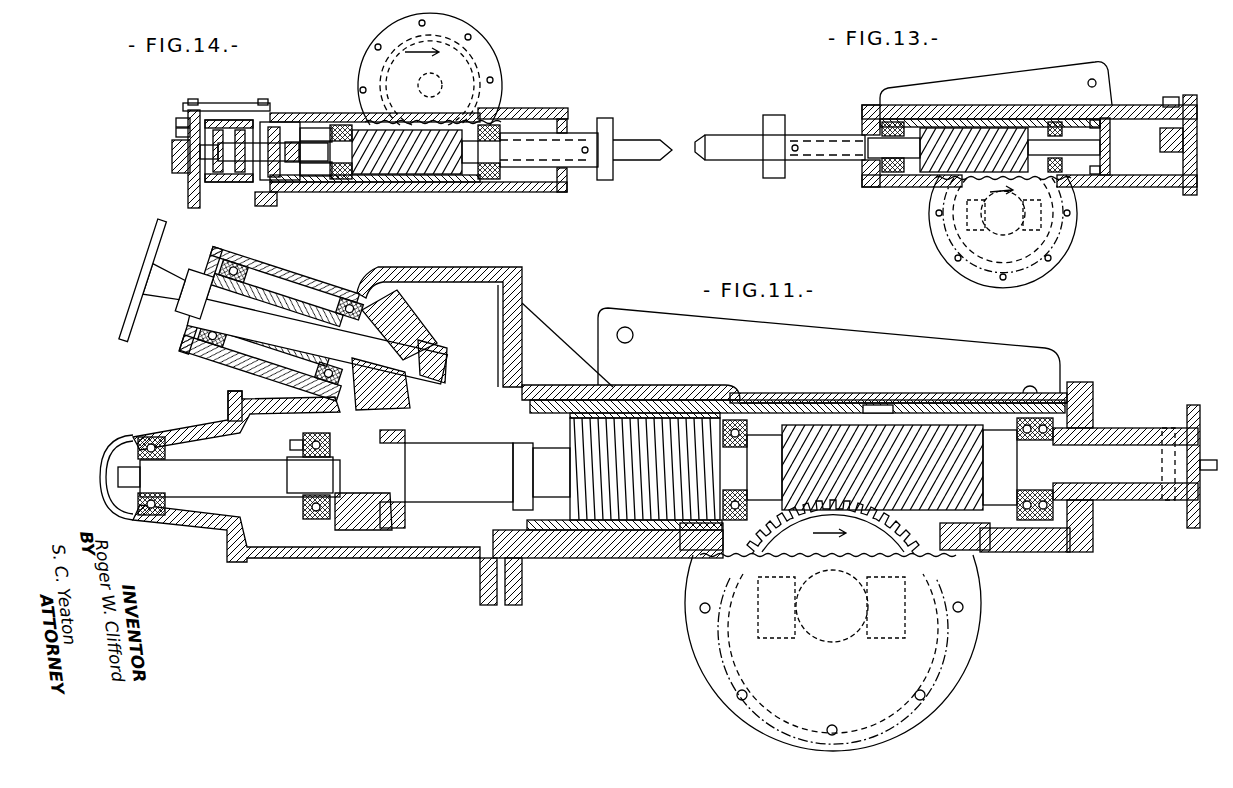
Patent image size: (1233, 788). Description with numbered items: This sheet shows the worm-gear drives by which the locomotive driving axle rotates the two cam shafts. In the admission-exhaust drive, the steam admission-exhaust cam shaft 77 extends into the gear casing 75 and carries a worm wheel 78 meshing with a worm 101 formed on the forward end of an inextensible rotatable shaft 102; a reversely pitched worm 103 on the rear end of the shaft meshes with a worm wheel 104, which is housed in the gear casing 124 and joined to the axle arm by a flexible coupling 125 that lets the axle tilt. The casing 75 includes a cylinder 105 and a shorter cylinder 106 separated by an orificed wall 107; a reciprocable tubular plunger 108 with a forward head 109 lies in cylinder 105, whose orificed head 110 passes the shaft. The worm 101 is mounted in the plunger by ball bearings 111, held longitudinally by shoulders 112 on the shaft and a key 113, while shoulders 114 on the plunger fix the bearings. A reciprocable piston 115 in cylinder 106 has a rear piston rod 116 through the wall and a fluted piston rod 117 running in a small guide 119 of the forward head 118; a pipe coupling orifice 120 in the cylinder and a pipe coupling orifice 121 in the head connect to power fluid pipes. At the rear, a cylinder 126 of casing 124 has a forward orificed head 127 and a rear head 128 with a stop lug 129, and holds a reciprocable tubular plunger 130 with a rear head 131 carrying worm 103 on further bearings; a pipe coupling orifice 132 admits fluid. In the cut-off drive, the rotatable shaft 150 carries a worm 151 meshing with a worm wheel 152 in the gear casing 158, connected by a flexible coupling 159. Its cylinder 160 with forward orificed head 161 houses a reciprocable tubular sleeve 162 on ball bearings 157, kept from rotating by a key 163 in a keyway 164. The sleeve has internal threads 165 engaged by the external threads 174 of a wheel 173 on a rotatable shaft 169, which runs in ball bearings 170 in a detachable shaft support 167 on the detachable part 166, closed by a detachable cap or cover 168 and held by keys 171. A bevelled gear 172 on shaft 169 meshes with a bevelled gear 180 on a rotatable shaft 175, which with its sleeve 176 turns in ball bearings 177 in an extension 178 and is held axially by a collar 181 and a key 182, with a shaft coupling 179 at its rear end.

In FIG. 14, the gear casing 75 is at (495, 96).
In FIG. 14, the steam admission-exhaust cam shaft 77 is at (418, 82).
In FIG. 14, the worm wheel 78 is at (482, 62).
In FIG. 14, the worm 101 is at (406, 188).
In FIG. 13, the rotatable shaft 102 is at (707, 141).
In FIG. 13, the worm 103 is at (926, 172).
In FIG. 13, the worm wheel 104 is at (1066, 223).
In FIG. 14, the cylinder 105 is at (545, 113).
In FIG. 14, the shorter cylinder 106 is at (222, 120).
In FIG. 14, the orificed wall 107 is at (276, 122).
In FIG. 14, the reciprocable tubular plunger 108 is at (330, 126).
In FIG. 14, the forward head 109 is at (300, 125).
In FIG. 14, the orificed head 110 is at (576, 126).
In FIG. 14, the ball bearings 111 is at (306, 190).
In FIG. 13, the ball bearings 111 is at (885, 181).
In FIG. 14, the shoulders 112 is at (346, 190).
In FIG. 14, the key 113 is at (320, 126).
In FIG. 14, the shoulders 114 is at (314, 192).
In FIG. 14, the reciprocable piston 115 is at (230, 186).
In FIG. 14, the rear piston rod 116 is at (250, 190).
In FIG. 14, the fluted piston rod 117 is at (181, 170).
In FIG. 14, the forward head 118 is at (190, 102).
In FIG. 14, the small guide 119 is at (176, 133).
In FIG. 14, the pipe coupling orifice 120 is at (270, 206).
In FIG. 14, the pipe coupling orifice 121 is at (178, 121).
In FIG. 13, the gear casing 124 is at (975, 88).
In FIG. 13, the flexible coupling 125 is at (1060, 251).
In FIG. 13, the cylinder 126 is at (1118, 101).
In FIG. 13, the forward orificed head 127 is at (868, 111).
In FIG. 13, the rear head 128 is at (1185, 186).
In FIG. 13, the stop lug 129 is at (1160, 138).
In FIG. 13, the reciprocable tubular plunger 130 is at (914, 119).
In FIG. 13, the rear head 131 is at (1110, 150).
In FIG. 13, the pipe coupling orifice 132 is at (1172, 97).
In FIG. 11, the rotatable shaft 150 is at (1115, 445).
In FIG. 11, the worm 151 is at (990, 478).
In FIG. 11, the worm wheel 152 is at (975, 630).
In FIG. 11, the ball bearings 157 is at (735, 420).
In FIG. 11, the gear casing 158 is at (892, 341).
In FIG. 11, the flexible coupling 159 is at (834, 650).
In FIG. 11, the cylinder 160 is at (705, 385).
In FIG. 11, the forward orificed head 161 is at (1094, 531).
In FIG. 11, the reciprocable tubular sleeve 162 is at (800, 401).
In FIG. 11, the key 163 is at (895, 400).
In FIG. 11, the keyway 164 is at (870, 405).
In FIG. 11, the internal threads 165 is at (650, 522).
In FIG. 11, the detachable part 166 is at (393, 560).
In FIG. 11, the detachable shaft support 167 is at (215, 536).
In FIG. 11, the detachable cap or cover 168 is at (118, 440).
In FIG. 11, the rotatable shaft 169 is at (258, 500).
In FIG. 11, the ball bearings 170 is at (150, 515).
In FIG. 11, the keys 171 is at (118, 470).
In FIG. 11, the bevelled gear 172 is at (404, 510).
In FIG. 11, the wheel 173 is at (525, 512).
In FIG. 11, the external threads 174 is at (580, 532).
In FIG. 11, the rotatable shaft 175 is at (226, 361).
In FIG. 11, the sleeve 176 is at (240, 385).
In FIG. 11, the ball bearings 177 is at (196, 349).
In FIG. 11, the extension 178 is at (290, 280).
In FIG. 11, the shaft coupling 179 is at (122, 326).
In FIG. 11, the bevelled gear 180 is at (430, 316).
In FIG. 11, the collar 181 is at (190, 324).
In FIG. 11, the key 182 is at (446, 350).